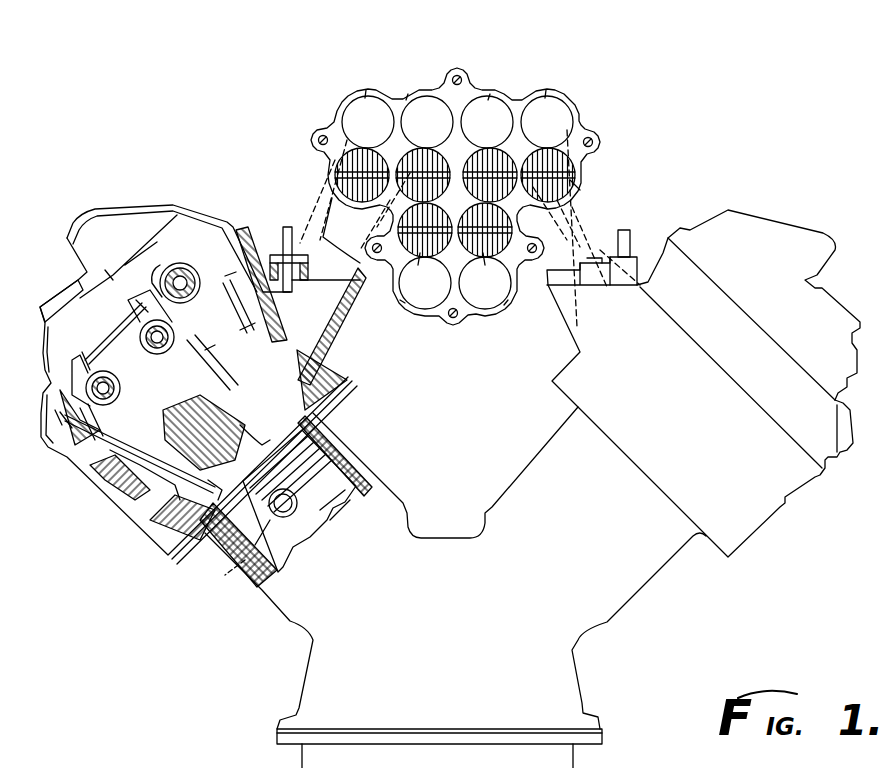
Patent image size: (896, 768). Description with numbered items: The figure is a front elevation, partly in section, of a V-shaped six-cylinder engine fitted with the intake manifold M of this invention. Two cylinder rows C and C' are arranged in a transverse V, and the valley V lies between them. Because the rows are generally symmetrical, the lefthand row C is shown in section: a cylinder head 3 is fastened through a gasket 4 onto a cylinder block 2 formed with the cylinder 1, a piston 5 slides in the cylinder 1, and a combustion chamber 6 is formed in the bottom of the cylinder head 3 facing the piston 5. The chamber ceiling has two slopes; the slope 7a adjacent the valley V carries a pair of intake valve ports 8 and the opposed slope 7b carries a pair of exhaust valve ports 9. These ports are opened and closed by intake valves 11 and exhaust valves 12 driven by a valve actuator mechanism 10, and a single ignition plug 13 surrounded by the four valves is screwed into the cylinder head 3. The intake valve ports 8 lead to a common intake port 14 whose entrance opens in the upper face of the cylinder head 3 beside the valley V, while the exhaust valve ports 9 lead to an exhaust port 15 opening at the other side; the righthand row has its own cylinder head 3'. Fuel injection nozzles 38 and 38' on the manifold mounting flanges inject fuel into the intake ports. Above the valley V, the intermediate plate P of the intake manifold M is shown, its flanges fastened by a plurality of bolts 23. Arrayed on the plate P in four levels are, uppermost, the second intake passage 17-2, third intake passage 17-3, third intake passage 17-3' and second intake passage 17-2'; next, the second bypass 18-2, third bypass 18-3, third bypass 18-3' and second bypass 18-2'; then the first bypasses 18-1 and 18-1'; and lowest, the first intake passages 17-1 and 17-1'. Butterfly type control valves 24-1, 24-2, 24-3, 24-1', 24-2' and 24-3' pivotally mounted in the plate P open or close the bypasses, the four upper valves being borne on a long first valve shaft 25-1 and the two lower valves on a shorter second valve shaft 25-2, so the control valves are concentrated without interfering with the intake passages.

The cylinder 1 is at (243, 568).
The cylinder block 2 is at (348, 445).
The cylinder head 3 is at (263, 454).
The cylinder head 3' is at (696, 407).
The gasket 4 is at (320, 414).
The piston 5 is at (326, 501).
The combustion chamber 6 is at (278, 500).
The ceiling slope 7a is at (290, 493).
The ceiling slope 7b is at (226, 550).
The intake valve ports 8 is at (266, 440).
The exhaust valve ports 9 is at (210, 488).
The valve actuator mechanism 10 is at (150, 280).
The intake valves 11 is at (240, 392).
The exhaust valves 12 is at (116, 427).
The ignition plug 13 is at (160, 390).
The intake port 14 is at (326, 336).
The exhaust port 15 is at (130, 508).
The first intake passage 17-1 is at (383, 308).
The second intake passage 17-2 is at (362, 76).
The third intake passage 17-3 is at (414, 81).
The first intake passage 17-1' is at (529, 315).
The second intake passage 17-2' is at (552, 76).
The third intake passage 17-3' is at (494, 77).
The first bypass 18-1 is at (425, 283).
The second bypass 18-2 is at (368, 122).
The third bypass 18-3 is at (427, 122).
The first bypass 18-1' is at (486, 283).
The second bypass 18-2' is at (547, 122).
The third bypass 18-3' is at (487, 122).
The bolts 23 is at (320, 136).
The control valve 24-1 is at (421, 270).
The control valve 24-2 is at (340, 175).
The control valve 24-3 is at (423, 163).
The control valve 24-1' is at (484, 270).
The control valve 24-2' is at (578, 175).
The control valve 24-3' is at (490, 163).
The first valve shaft 25-1 is at (580, 190).
The second valve shaft 25-2 is at (512, 232).
The fuel injection nozzle 38 is at (289, 247).
The fuel injection nozzle 38' is at (626, 243).
The cylinder row C is at (194, 351).
The cylinder row C' is at (748, 268).
The intake manifold M is at (506, 95).
The intermediate plate P is at (455, 196).
The valley V is at (449, 459).